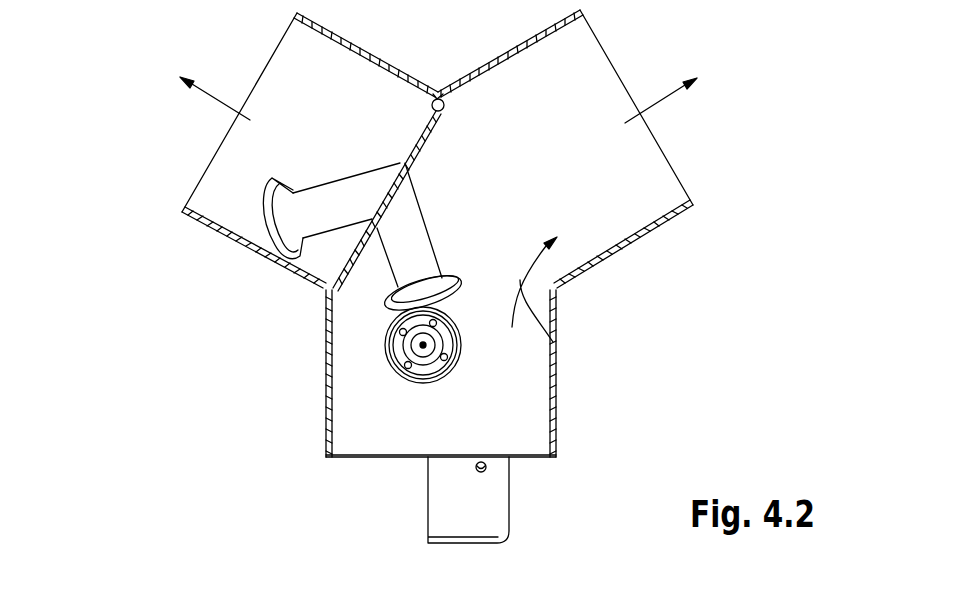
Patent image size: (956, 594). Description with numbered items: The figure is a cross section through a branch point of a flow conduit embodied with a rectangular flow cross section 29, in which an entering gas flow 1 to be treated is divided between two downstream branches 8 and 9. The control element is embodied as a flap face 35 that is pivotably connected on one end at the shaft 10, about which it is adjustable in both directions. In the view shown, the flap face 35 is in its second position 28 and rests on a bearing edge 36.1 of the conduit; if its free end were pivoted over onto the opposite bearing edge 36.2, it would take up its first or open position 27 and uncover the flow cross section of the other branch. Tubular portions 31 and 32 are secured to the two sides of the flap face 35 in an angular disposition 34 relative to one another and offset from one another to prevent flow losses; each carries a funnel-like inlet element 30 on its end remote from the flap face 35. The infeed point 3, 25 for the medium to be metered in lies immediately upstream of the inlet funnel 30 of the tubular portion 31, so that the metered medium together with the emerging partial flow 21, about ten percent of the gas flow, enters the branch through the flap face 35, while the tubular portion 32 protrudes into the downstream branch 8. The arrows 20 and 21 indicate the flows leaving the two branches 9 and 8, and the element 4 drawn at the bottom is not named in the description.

The entering gas flow 1 is at (390, 434).
The infeed point 3 is at (516, 389).
The infeed point 25 is at (425, 345).
The mounting bracket 4 is at (509, 510).
The branch 8 is at (210, 177).
The branch 9 is at (662, 143).
The shaft 10 is at (438, 92).
The flow direction right outlet 20 is at (653, 100).
The partial flow 21 is at (222, 100).
The first or open position 27 is at (558, 347).
The second position 28 is at (264, 294).
The rectangular flow cross section 29 is at (357, 445).
The funnel-like inlet element 30 is at (265, 207).
The tubular portion 31 is at (410, 203).
The tubular portion 32 is at (318, 198).
The angular disposition 34 is at (362, 151).
The flap face 35 is at (420, 140).
The bearing edge 36.1 is at (323, 292).
The bearing edge 36.2 is at (558, 290).